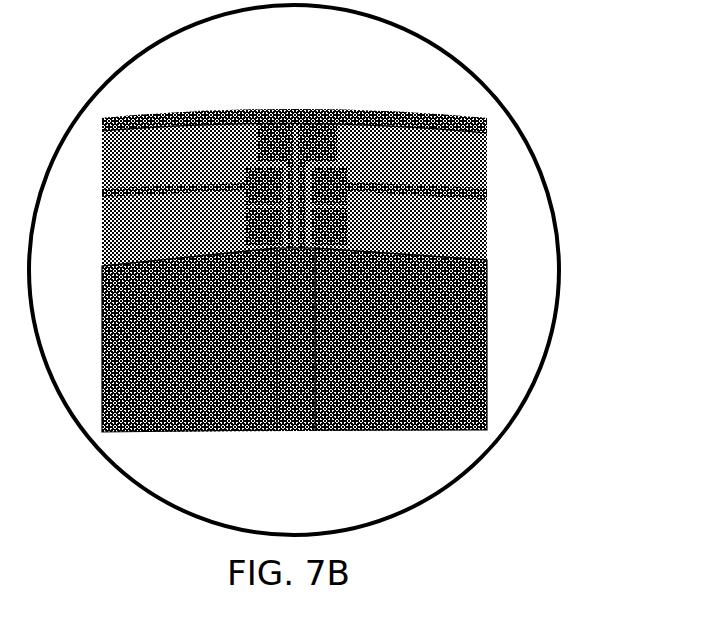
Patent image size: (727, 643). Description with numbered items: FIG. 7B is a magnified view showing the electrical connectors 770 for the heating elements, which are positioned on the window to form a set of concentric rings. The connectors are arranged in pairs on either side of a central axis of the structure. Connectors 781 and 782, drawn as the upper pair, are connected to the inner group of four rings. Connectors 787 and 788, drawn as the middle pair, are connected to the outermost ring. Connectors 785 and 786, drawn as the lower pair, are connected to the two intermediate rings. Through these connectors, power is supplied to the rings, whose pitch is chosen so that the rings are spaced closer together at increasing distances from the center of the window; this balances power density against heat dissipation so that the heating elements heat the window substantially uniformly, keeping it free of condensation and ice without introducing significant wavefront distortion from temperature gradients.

The electrical connectors 770 is at (466, 62).
The connector 781 is at (255, 143).
The connector 782 is at (337, 150).
The connector 787 is at (242, 192).
The connector 788 is at (347, 193).
The connector 786 is at (243, 247).
The connector 785 is at (345, 248).